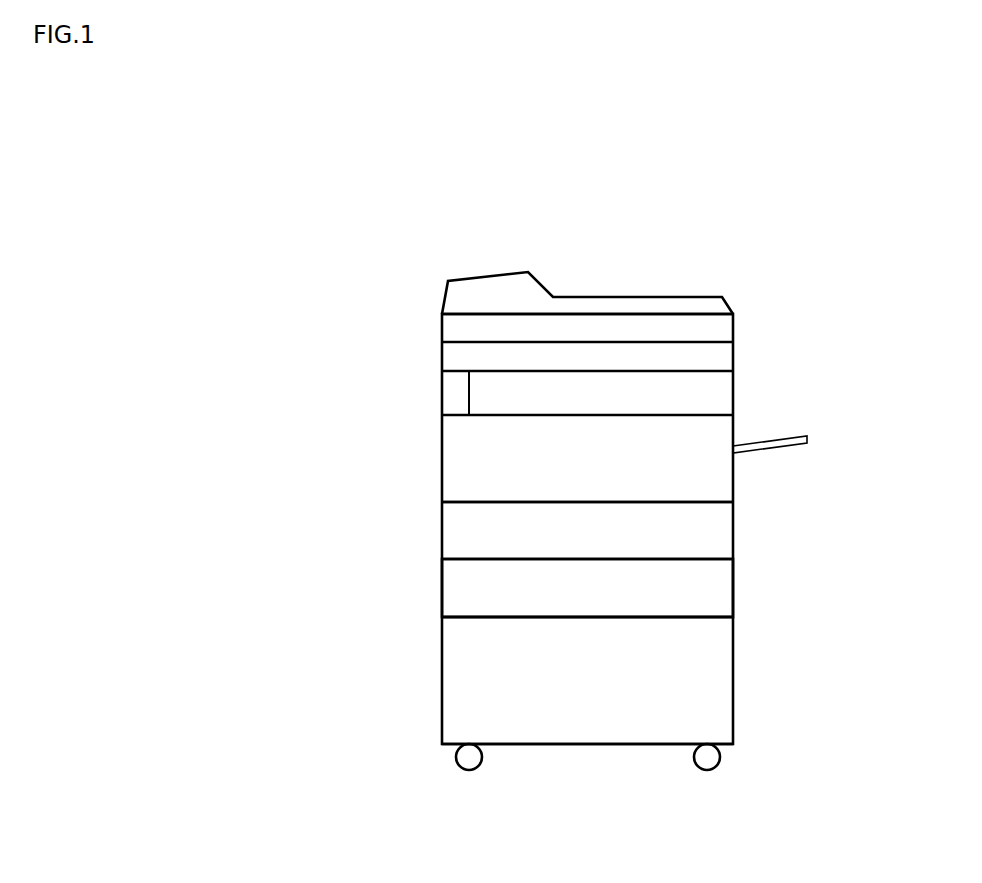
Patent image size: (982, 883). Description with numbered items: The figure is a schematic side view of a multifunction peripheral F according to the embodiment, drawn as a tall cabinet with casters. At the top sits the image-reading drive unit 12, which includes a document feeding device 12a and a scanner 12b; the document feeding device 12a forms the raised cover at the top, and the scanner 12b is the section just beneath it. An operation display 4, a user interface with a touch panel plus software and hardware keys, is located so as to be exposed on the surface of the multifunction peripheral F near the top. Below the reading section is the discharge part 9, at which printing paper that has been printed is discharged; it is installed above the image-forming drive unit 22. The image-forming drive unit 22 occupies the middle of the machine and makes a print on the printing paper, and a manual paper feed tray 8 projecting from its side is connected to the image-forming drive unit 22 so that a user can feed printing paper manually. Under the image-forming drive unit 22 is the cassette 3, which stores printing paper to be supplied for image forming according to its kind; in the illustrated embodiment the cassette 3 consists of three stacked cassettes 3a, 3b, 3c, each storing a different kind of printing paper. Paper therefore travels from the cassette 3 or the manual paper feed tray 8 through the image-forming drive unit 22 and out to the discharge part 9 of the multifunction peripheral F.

The operation display 4 is at (458, 332).
The discharge part 9 is at (519, 397).
The image-reading drive unit 12 is at (659, 337).
The document feeding device 12a is at (722, 302).
The scanner 12b is at (723, 358).
The manual paper feed tray 8 is at (798, 435).
The image-forming drive unit 22 is at (718, 482).
The cassette 3 is at (655, 643).
The cassette 3a is at (722, 542).
The cassette 3b is at (723, 598).
The cassette 3c is at (632, 701).
The multifunction peripheral F is at (772, 222).